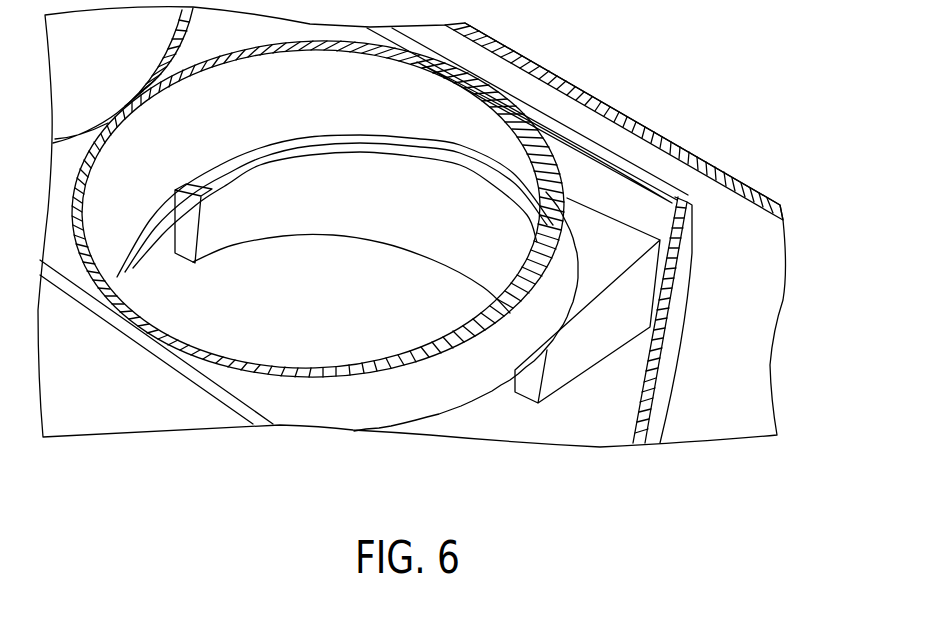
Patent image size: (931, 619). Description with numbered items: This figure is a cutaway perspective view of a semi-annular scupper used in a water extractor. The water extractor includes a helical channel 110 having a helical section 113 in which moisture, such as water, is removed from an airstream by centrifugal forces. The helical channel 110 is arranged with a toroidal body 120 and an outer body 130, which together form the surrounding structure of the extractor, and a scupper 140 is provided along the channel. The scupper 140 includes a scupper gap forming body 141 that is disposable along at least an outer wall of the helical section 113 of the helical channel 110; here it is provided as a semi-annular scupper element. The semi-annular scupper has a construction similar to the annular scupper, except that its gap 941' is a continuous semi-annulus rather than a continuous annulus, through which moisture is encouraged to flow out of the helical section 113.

The helical channel 110 is at (407, 403).
The helical section 113 is at (298, 116).
The toroidal body 120 is at (677, 200).
The outer body 130 is at (582, 98).
The scupper 140 is at (600, 213).
The scupper gap forming body 141 is at (343, 222).
The gap 941' is at (216, 245).